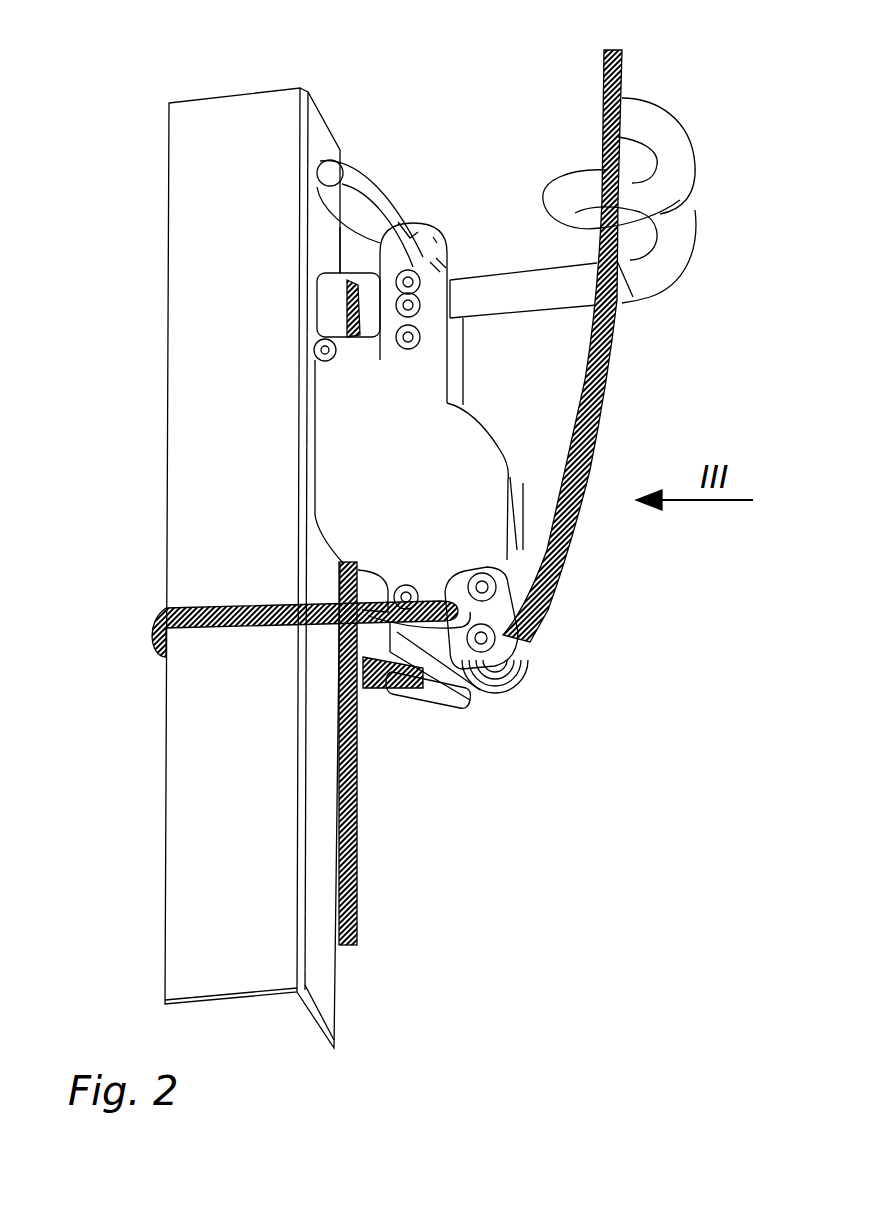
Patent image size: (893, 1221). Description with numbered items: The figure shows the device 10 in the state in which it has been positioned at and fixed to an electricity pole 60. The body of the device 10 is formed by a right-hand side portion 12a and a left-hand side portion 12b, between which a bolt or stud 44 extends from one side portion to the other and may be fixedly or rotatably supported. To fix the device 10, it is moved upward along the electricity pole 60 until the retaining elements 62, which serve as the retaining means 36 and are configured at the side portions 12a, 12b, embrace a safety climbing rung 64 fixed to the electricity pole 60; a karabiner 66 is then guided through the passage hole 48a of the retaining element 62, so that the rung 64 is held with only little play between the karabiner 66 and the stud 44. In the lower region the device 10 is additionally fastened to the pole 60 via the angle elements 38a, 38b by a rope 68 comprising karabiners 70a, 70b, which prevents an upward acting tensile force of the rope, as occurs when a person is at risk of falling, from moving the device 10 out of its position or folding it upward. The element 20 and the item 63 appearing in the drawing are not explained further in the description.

The device 10 is at (492, 396).
The right-hand side portion 12a is at (462, 470).
The left-hand side portion 12b is at (462, 267).
The guide rail 20 is at (357, 905).
The retaining means 36 is at (501, 376).
The angle element 38a is at (533, 636).
The angle element 38b is at (517, 705).
The stud 44 is at (452, 338).
The passage hole 48a is at (412, 235).
The electricity pole 60 is at (207, 857).
The retaining element 62 is at (453, 277).
The hose connection 63 is at (407, 213).
The safety climbing rung 64 is at (677, 150).
The karabiner 66 is at (370, 160).
The rope 68 is at (157, 602).
The karabiner 70a is at (378, 692).
The karabiner 70b is at (473, 707).